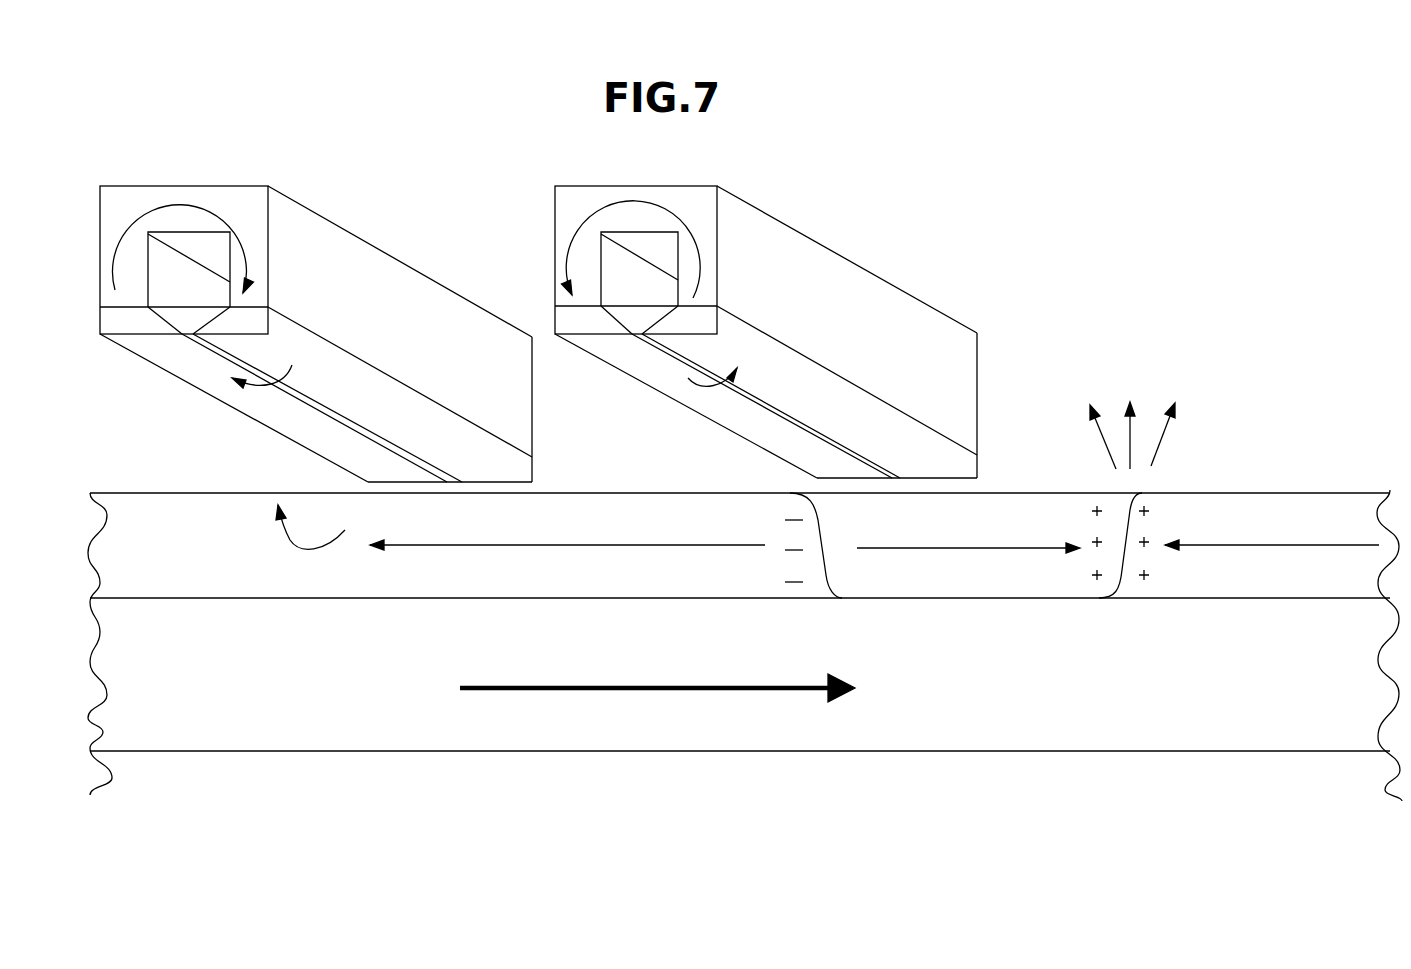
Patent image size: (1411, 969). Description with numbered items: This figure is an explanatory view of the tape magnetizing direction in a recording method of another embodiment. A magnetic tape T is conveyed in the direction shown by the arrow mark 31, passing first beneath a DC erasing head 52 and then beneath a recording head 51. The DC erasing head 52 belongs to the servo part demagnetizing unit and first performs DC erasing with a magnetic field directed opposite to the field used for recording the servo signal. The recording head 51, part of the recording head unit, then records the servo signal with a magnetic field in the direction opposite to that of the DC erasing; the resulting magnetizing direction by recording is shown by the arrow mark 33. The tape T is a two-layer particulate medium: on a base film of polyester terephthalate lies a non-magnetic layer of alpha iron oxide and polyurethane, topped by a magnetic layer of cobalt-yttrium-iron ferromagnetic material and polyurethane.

The DC erasing head 52 is at (410, 243).
The recording head 51 is at (857, 242).
The magnetic tape T is at (685, 484).
The arrow mark 31 is at (637, 692).
The arrow mark 33 is at (1037, 545).